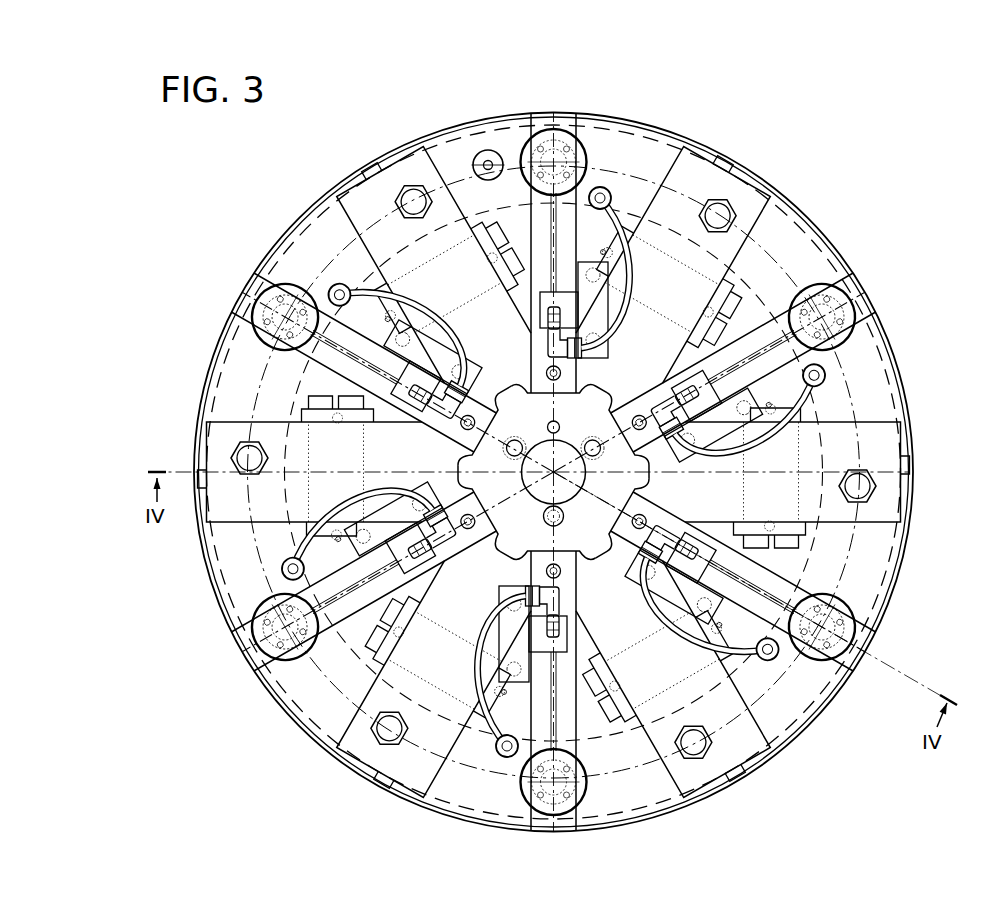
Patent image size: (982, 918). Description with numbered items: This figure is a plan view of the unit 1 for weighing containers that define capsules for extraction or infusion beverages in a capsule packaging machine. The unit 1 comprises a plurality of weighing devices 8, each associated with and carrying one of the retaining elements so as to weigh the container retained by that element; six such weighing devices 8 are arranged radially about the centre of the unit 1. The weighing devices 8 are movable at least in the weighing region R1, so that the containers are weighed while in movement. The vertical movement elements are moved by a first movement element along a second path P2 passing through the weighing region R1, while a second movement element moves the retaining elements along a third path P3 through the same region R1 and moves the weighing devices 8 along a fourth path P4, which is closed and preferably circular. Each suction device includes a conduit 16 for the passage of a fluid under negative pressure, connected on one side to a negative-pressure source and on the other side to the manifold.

The unit for weighing containers 1 is at (753, 123).
The weighing device 8 is at (528, 216).
The conduit 16 is at (746, 350).
The region for weighing R1 is at (441, 142).
The second path P2 is at (576, 506).
The third path P3 is at (576, 506).
The fourth path P4 is at (775, 706).